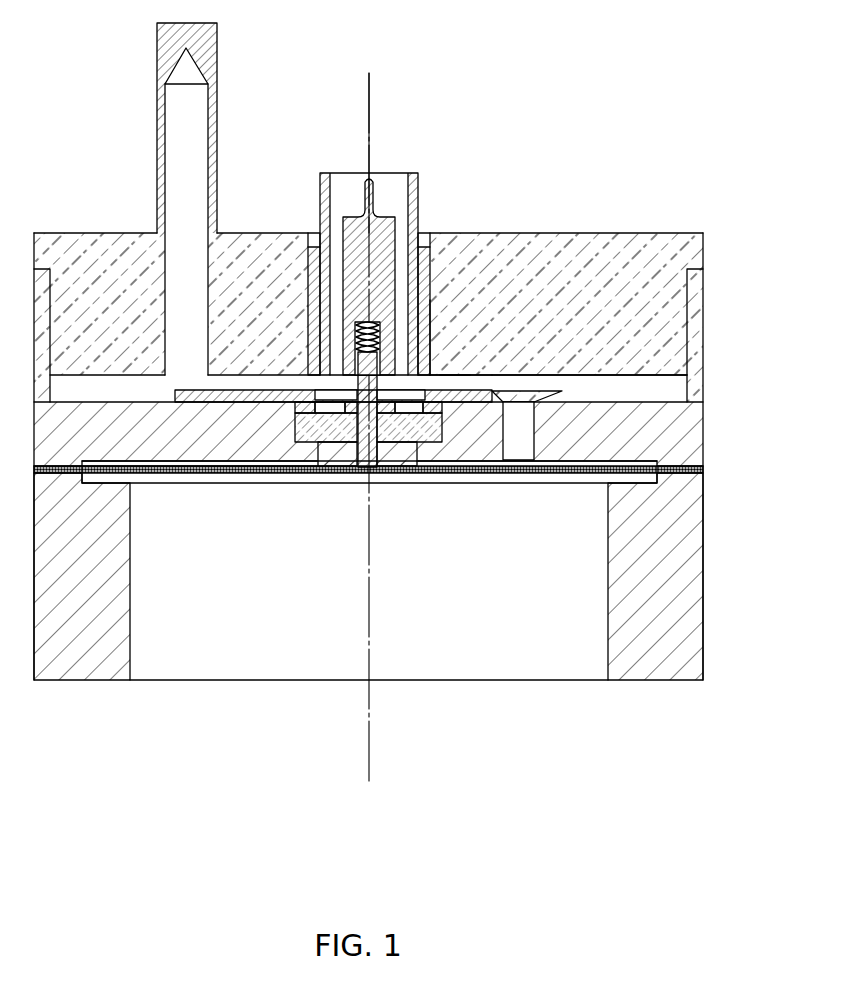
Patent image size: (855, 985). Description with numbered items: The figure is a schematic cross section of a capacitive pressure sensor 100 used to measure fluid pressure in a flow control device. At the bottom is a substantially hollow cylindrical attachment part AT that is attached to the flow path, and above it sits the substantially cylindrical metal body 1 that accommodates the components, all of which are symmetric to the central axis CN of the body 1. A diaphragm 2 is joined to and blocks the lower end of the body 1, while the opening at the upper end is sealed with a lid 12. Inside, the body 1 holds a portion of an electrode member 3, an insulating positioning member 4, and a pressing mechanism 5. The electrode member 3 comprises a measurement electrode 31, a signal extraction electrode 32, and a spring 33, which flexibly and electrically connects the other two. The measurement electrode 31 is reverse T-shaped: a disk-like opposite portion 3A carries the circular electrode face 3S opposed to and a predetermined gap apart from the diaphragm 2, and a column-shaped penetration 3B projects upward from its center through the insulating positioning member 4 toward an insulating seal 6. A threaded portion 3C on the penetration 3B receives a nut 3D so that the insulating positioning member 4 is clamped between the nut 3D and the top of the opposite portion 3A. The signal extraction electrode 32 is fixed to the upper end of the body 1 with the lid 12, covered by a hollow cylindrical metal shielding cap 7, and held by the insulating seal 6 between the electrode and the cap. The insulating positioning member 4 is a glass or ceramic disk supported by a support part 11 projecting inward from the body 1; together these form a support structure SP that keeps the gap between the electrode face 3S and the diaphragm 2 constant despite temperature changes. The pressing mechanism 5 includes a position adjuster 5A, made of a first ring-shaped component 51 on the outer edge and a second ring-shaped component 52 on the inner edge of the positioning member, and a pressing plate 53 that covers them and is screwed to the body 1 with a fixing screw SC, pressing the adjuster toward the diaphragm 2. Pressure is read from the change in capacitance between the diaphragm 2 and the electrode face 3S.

The capacitive pressure sensor 100 is at (416, 405).
The body 1 is at (712, 350).
The lid 12 is at (465, 224).
The pressing mechanism 5 is at (368, 273).
The position adjuster 5A is at (435, 321).
The first ring-shaped component 51 is at (457, 375).
The second ring-shaped component 52 is at (441, 391).
The pressing plate 53 is at (585, 344).
The shielding cap 7 is at (327, 173).
The insulating seal 6 is at (401, 232).
The signal extraction electrode 32 is at (343, 283).
The spring 33 is at (355, 332).
The electrode member 3 is at (288, 440).
The opposite portion 3A is at (300, 461).
The penetration 3B is at (350, 396).
The threaded portion 3C is at (296, 431).
The nut 3D is at (345, 467).
The electrode face 3S is at (392, 467).
The measurement electrode 31 is at (217, 460).
The insulating positioning member 4 is at (445, 431).
The fixing screw SC is at (538, 427).
The support part 11 is at (290, 460).
The diaphragm 2 is at (337, 484).
The support structure SP is at (470, 456).
The attachment part AT is at (691, 699).
The central axis CN is at (369, 92).